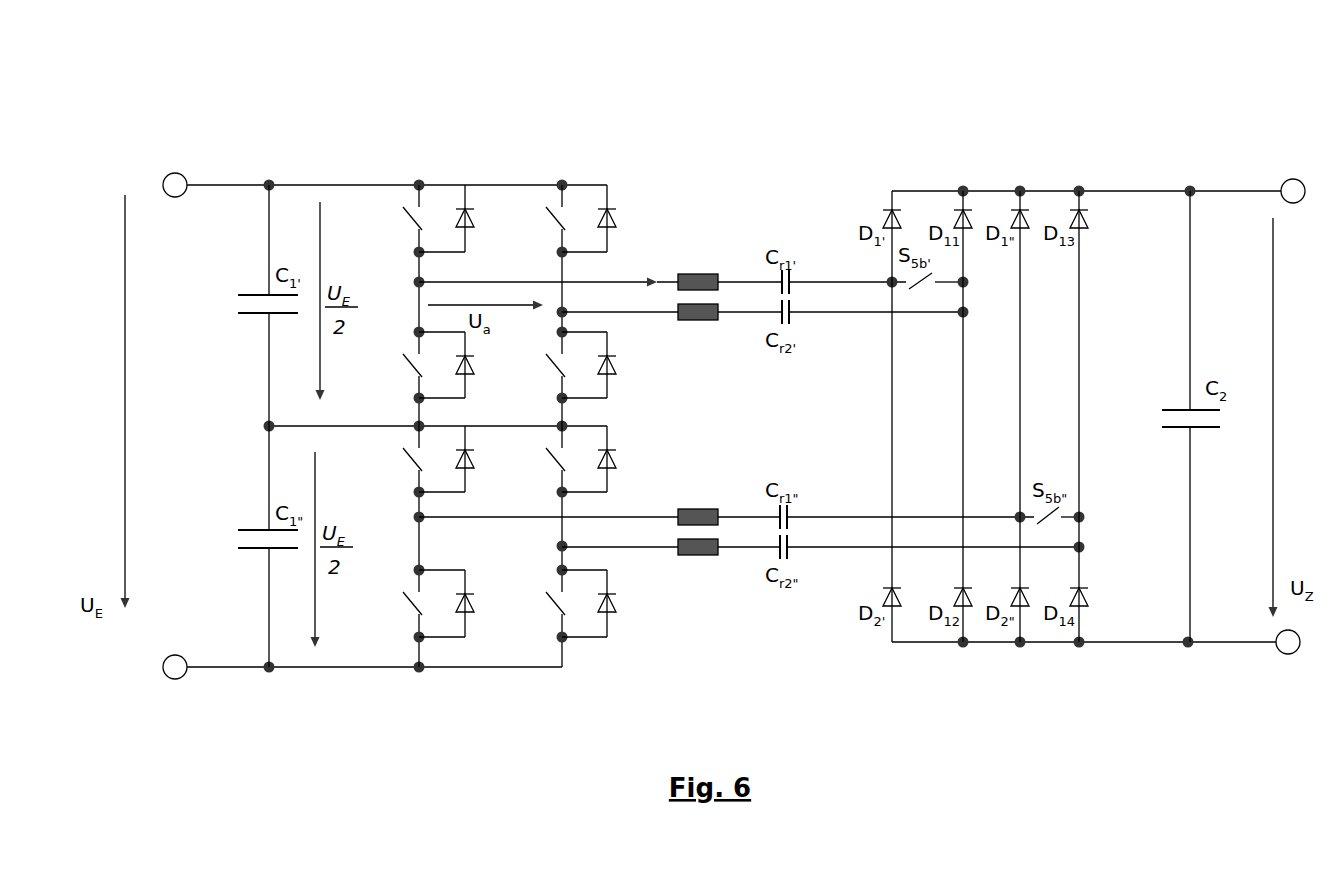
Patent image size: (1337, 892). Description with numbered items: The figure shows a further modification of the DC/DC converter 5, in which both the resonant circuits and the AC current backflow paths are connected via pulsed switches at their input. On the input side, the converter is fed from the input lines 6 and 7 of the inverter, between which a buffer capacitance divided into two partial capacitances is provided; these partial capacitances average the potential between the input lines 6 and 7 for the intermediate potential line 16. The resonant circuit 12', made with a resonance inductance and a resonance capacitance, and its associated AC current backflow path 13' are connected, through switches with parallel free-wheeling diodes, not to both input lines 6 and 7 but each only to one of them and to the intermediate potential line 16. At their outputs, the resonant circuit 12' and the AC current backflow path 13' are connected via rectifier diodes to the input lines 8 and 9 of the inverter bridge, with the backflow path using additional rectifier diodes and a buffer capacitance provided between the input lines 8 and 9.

The DC/DC converter 5 is at (667, 108).
The input line 6 is at (353, 185).
The input line 7 is at (340, 667).
The input line 8 is at (1160, 190).
The input line 9 is at (1237, 644).
The resonant circuit 12' is at (600, 220).
The AC current backflow path 13' is at (672, 357).
The intermediate potential line 16 is at (295, 426).